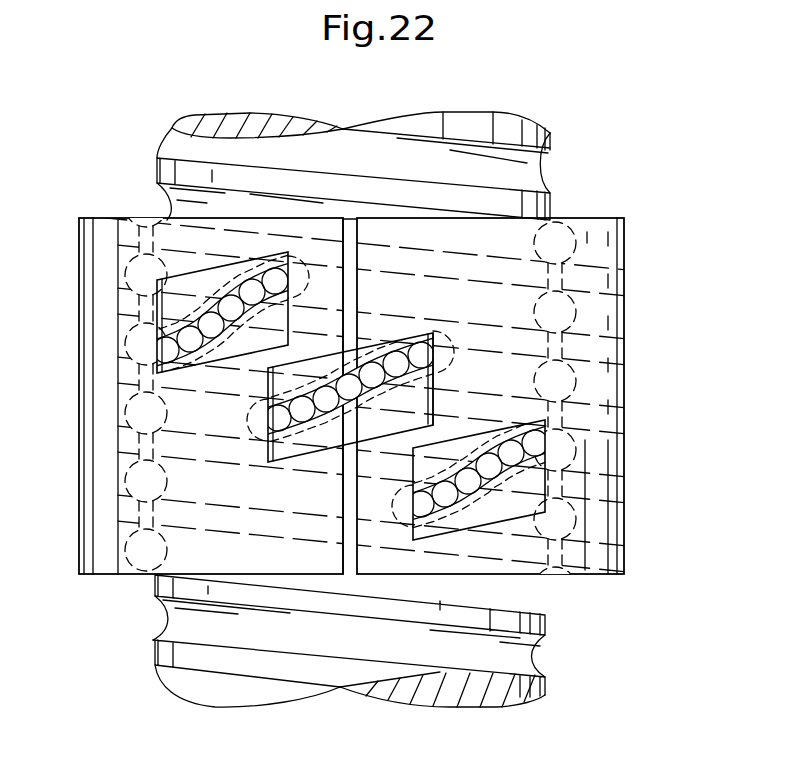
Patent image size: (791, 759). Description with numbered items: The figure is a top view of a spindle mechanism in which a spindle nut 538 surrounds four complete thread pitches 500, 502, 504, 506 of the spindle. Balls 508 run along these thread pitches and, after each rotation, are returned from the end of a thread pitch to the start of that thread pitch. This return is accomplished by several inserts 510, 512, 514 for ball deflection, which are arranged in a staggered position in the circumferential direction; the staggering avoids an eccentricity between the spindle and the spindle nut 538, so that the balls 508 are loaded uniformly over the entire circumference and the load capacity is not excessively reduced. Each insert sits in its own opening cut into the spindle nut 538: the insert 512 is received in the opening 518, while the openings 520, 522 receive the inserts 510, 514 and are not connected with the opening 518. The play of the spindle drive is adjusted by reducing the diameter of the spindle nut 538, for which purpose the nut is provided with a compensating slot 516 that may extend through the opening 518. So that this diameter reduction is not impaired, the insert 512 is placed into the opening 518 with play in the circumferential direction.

The thread pitch 500 is at (595, 528).
The thread pitch 502 is at (565, 420).
The thread pitch 504 is at (570, 356).
The thread pitch 506 is at (565, 296).
The balls 508 is at (250, 288).
The insert 510 is at (545, 480).
The insert 512 is at (298, 448).
The insert 514 is at (163, 306).
The compensating slot 516 is at (348, 258).
The opening 518 is at (437, 345).
The opening 520 is at (508, 515).
The opening 522 is at (179, 276).
The spindle nut 538 is at (592, 229).